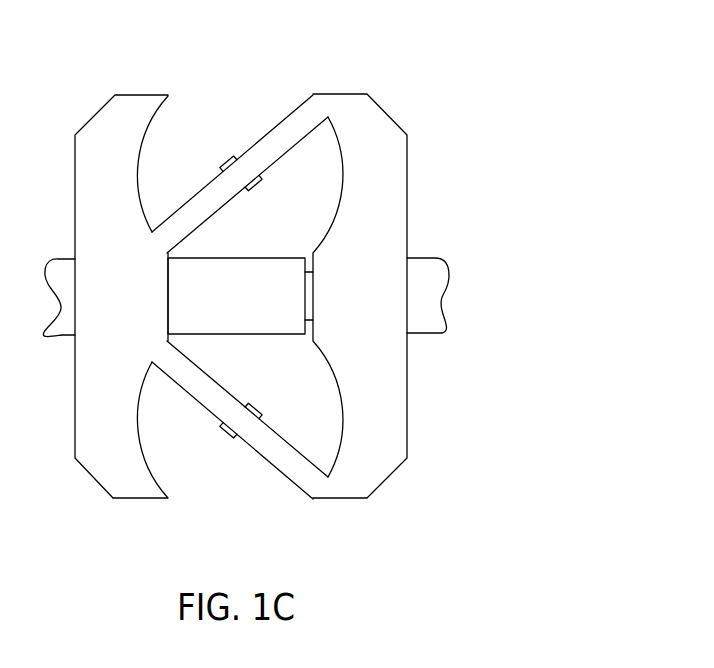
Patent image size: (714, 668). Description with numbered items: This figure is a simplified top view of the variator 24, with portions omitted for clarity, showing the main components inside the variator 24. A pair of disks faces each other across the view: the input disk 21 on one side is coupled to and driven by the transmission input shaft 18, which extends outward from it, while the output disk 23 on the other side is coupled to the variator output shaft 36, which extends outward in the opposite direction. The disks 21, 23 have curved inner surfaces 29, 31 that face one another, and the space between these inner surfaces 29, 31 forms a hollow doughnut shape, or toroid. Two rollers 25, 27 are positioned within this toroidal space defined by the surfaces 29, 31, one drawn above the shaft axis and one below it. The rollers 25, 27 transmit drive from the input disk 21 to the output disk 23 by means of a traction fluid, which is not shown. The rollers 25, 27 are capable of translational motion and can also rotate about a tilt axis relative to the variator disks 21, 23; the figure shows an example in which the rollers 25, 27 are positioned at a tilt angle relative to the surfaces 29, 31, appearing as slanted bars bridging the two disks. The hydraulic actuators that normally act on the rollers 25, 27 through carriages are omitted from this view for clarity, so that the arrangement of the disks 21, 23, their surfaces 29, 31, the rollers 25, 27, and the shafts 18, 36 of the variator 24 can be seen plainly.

The transmission input shaft 18 is at (55, 259).
The input disk 21 is at (100, 121).
The output disk 23 is at (382, 119).
The variator 24 is at (488, 53).
The roller 25 is at (280, 124).
The roller 27 is at (280, 467).
The inner surface 29 is at (147, 175).
The inner surface 31 is at (339, 202).
The variator output shaft 36 is at (422, 262).